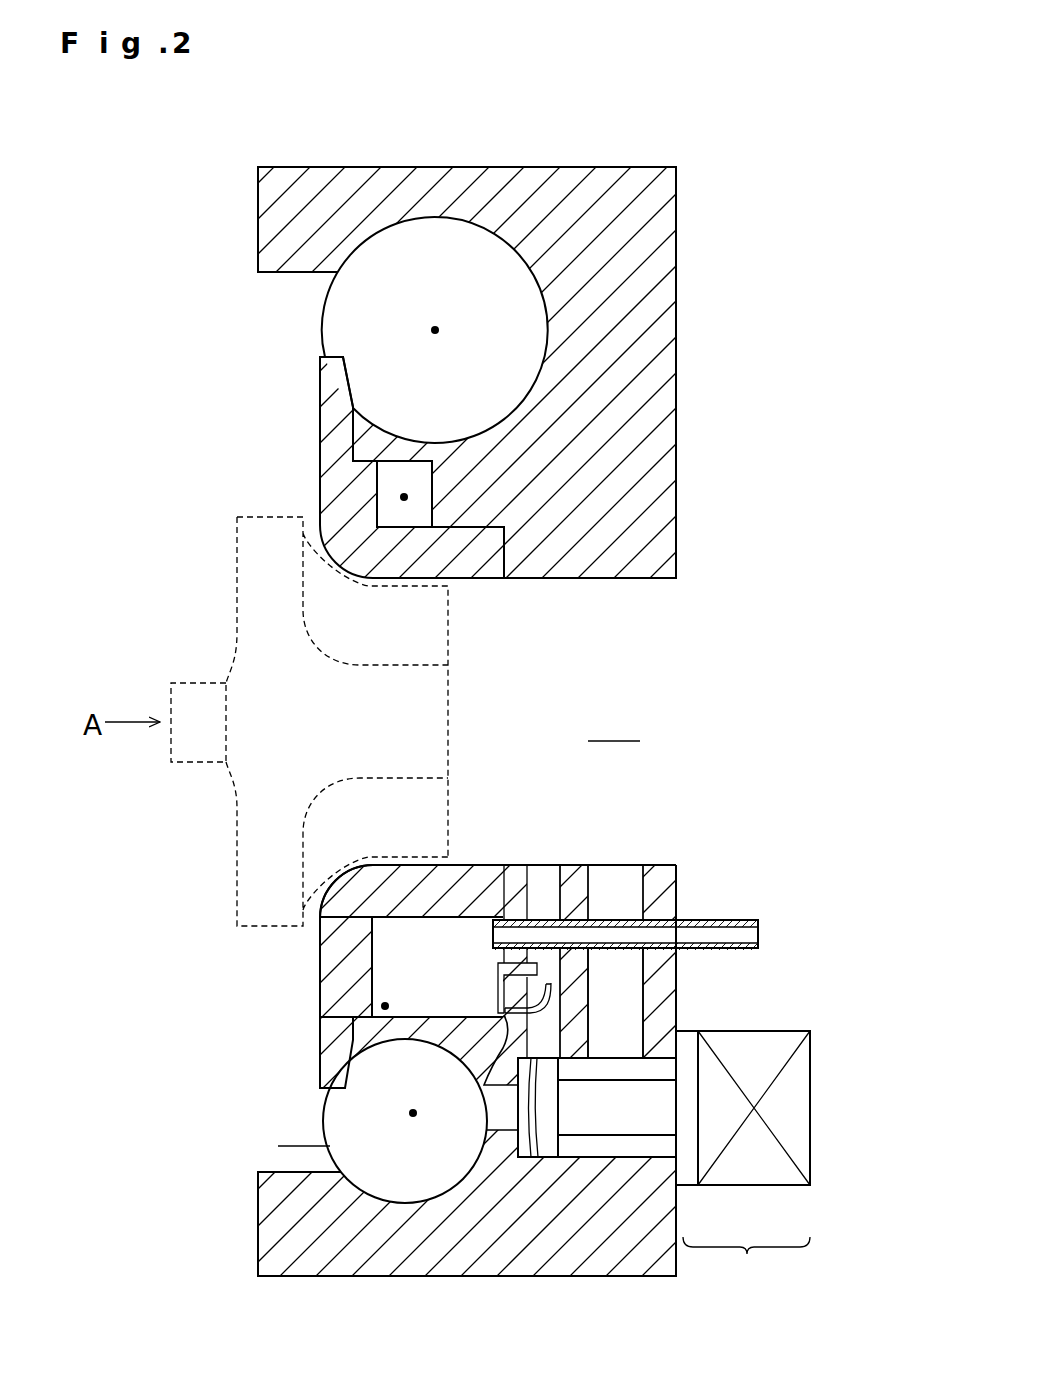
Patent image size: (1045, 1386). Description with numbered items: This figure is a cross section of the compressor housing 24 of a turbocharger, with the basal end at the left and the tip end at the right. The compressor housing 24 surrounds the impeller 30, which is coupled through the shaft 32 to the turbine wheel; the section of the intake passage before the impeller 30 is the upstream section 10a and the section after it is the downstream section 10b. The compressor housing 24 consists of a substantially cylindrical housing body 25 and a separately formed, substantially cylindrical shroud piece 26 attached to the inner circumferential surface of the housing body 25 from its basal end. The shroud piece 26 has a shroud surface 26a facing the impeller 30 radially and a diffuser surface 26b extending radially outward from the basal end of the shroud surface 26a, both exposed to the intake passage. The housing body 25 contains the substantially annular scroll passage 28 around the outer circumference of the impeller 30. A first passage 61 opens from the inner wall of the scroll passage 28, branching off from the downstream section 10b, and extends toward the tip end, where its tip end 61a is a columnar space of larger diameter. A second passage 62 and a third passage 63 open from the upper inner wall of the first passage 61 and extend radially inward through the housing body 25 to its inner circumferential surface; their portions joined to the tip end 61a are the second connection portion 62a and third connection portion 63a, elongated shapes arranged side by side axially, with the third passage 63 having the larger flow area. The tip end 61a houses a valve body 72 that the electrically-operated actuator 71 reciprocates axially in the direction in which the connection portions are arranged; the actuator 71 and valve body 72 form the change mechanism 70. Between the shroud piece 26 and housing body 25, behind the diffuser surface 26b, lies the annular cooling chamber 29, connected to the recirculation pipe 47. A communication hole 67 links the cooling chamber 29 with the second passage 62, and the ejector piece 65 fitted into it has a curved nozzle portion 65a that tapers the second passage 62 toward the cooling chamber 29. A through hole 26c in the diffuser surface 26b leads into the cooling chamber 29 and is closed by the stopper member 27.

The upstream section 10a is at (615, 725).
The downstream section 10b is at (305, 1130).
The compressor housing 24 is at (708, 348).
The housing body 25 is at (640, 579).
The shroud piece 26 is at (305, 432).
The shroud surface 26a is at (490, 580).
The diffuser surface 26b is at (320, 463).
The through hole 26c is at (345, 925).
The stopper member 27 is at (320, 968).
The scroll passage 28 is at (436, 328).
The cooling chamber 29 is at (404, 497).
The impeller 30 is at (448, 657).
The shaft 32 is at (202, 683).
The recirculation pipe 47 is at (720, 917).
The first passage 61 is at (490, 1127).
The tip end 61a is at (588, 1150).
The second passage 62 is at (560, 882).
The second connection portion 62a is at (535, 1157).
The third passage 63 is at (643, 882).
The third connection portion 63a is at (635, 1050).
The ejector piece 65 is at (494, 988).
The nozzle portion 65a is at (550, 1005).
The communication hole 67 is at (470, 1068).
The change mechanism 70 is at (746, 1259).
The actuator 71 is at (775, 1172).
The valve body 72 is at (637, 1137).